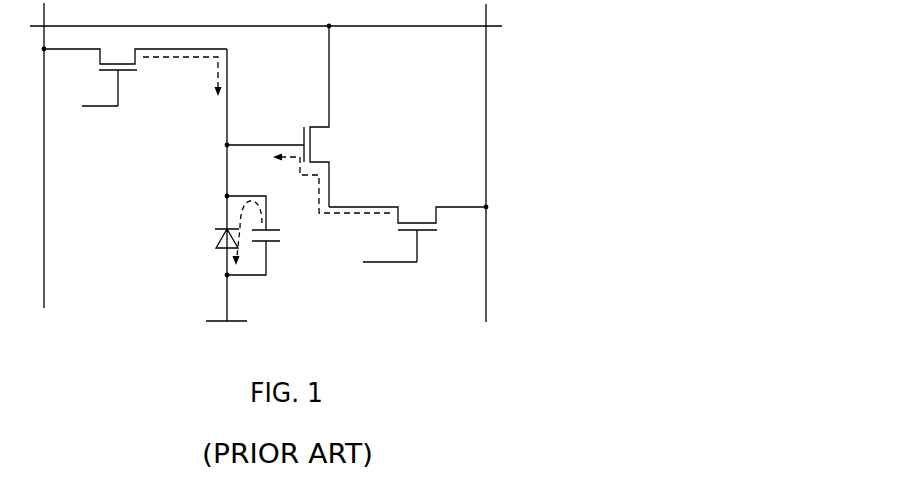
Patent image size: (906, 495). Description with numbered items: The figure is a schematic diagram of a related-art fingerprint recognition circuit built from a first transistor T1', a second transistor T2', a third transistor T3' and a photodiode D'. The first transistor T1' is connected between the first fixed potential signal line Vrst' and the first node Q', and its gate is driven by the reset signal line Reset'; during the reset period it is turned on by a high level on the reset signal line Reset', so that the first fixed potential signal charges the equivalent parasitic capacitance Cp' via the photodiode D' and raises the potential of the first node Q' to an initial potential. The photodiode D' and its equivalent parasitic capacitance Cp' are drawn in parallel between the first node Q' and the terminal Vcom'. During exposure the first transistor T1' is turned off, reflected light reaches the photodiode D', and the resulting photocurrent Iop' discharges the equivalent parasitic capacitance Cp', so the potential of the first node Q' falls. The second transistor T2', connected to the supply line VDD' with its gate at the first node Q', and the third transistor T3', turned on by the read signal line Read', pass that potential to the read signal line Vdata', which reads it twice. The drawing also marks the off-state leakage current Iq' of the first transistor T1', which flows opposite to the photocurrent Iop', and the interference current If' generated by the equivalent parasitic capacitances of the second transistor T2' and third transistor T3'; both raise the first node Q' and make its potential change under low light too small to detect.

The first transistor T1' is at (135, 68).
The second transistor T2' is at (330, 116).
The third transistor T3' is at (407, 227).
The photodiode D' is at (212, 236).
The equivalent parasitic capacitance Cp' is at (270, 235).
The reset signal line Reset' is at (101, 119).
The read signal line Read' is at (390, 276).
The VDD' line VDD' is at (291, 28).
The read signal line Vdata' is at (487, 175).
The first fixed potential signal line Vrst' is at (49, 167).
The Vcom' terminal Vcom' is at (228, 311).
The first node Q' is at (253, 122).
The off-state leakage current Iq' is at (183, 85).
The interference current If' is at (321, 181).
The photocurrent Iop' is at (215, 245).